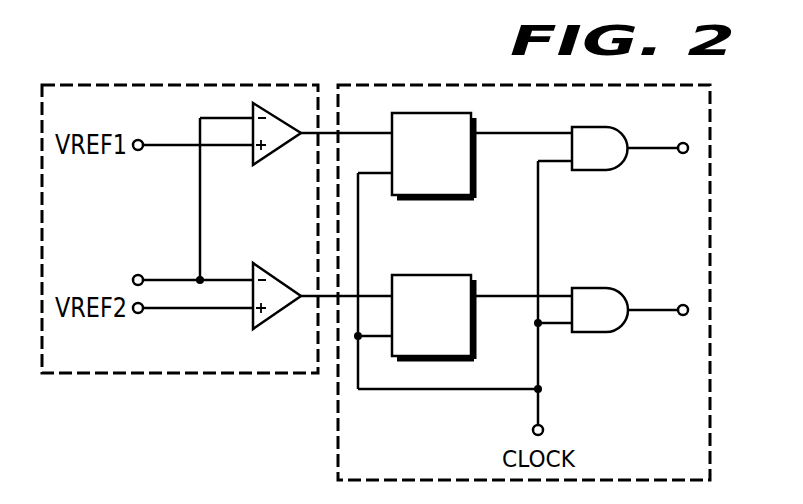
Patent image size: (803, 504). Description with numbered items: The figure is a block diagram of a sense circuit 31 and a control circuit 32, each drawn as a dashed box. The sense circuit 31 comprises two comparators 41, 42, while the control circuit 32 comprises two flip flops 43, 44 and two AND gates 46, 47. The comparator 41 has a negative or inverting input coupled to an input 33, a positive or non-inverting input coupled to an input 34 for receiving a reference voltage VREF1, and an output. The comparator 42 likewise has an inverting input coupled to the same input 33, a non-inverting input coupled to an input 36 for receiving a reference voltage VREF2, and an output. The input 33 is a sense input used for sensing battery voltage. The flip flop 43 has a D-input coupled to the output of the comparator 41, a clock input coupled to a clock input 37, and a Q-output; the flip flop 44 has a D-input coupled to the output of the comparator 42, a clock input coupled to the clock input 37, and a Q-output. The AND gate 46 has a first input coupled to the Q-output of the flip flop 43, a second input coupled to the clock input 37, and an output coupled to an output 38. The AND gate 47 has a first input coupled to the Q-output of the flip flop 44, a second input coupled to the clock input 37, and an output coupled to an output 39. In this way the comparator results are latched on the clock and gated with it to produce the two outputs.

The sense circuit 31 is at (112, 374).
The control circuit 32 is at (337, 435).
The input 33 is at (137, 275).
The input 34 is at (139, 150).
The input 36 is at (139, 313).
The clock input 37 is at (543, 428).
The output 38 is at (683, 143).
The output 39 is at (683, 315).
The comparator 41 is at (277, 152).
The comparator 42 is at (278, 273).
The flip flop 43 is at (420, 196).
The flip flop 44 is at (448, 274).
The AND gate 46 is at (605, 171).
The AND gate 47 is at (607, 288).